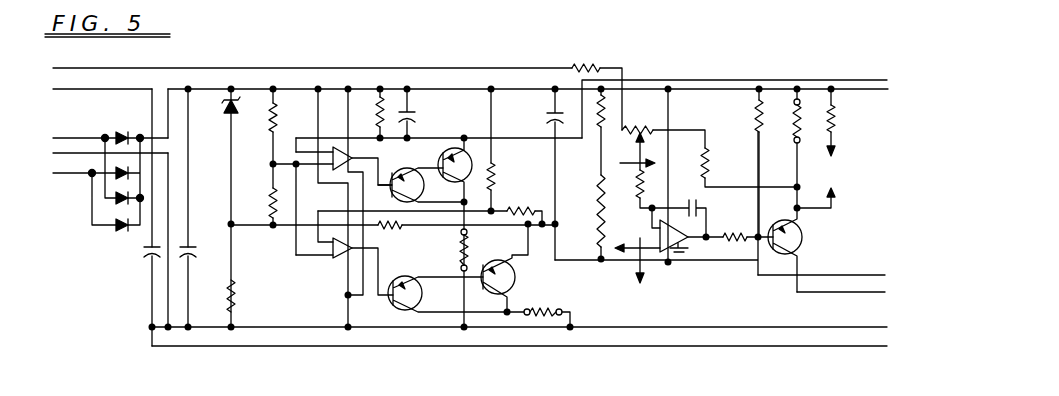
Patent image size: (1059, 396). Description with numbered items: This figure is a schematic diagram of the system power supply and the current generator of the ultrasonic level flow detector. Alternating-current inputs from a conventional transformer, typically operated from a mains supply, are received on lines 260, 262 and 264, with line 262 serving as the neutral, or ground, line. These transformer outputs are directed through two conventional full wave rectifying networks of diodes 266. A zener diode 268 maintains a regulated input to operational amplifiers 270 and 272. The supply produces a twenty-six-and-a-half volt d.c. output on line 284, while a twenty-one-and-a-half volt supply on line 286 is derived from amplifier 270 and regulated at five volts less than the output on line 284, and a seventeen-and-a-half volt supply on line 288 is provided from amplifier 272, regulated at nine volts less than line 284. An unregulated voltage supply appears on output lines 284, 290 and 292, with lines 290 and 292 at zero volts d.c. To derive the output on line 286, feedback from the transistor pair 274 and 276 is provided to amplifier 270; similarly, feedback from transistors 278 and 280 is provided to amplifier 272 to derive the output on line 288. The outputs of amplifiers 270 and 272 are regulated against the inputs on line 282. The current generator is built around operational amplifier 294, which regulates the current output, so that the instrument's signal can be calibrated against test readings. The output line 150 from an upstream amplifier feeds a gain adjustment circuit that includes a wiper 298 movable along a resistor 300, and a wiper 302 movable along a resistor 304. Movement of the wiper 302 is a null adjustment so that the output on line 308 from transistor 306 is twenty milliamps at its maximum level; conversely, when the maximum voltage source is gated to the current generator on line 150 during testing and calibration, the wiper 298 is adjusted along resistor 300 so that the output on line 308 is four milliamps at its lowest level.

The output line 150 is at (210, 68).
The transformer input line 260 is at (84, 137).
The neutral line 262 is at (54, 153).
The transformer input line 264 is at (82, 178).
The full wave rectifying diodes 266 is at (118, 192).
The zener diode 268 is at (227, 107).
The operational amplifier 270 is at (352, 158).
The operational amplifier 272 is at (343, 257).
The transistor 274 is at (427, 182).
The transistor 276 is at (442, 152).
The transistor 278 is at (413, 283).
The transistor 280 is at (515, 280).
The input line 282 is at (280, 160).
The output line 284 is at (888, 89).
The output line 286 is at (850, 80).
The output line 288 is at (862, 275).
The output line 290 is at (887, 327).
The output line 292 is at (777, 347).
The operational amplifier 294 is at (652, 226).
The wiper 298 is at (638, 158).
The resistor 300 is at (645, 127).
The wiper 302 is at (627, 252).
The resistor 304 is at (597, 238).
The transistor 306 is at (803, 240).
The output line 308 is at (850, 293).